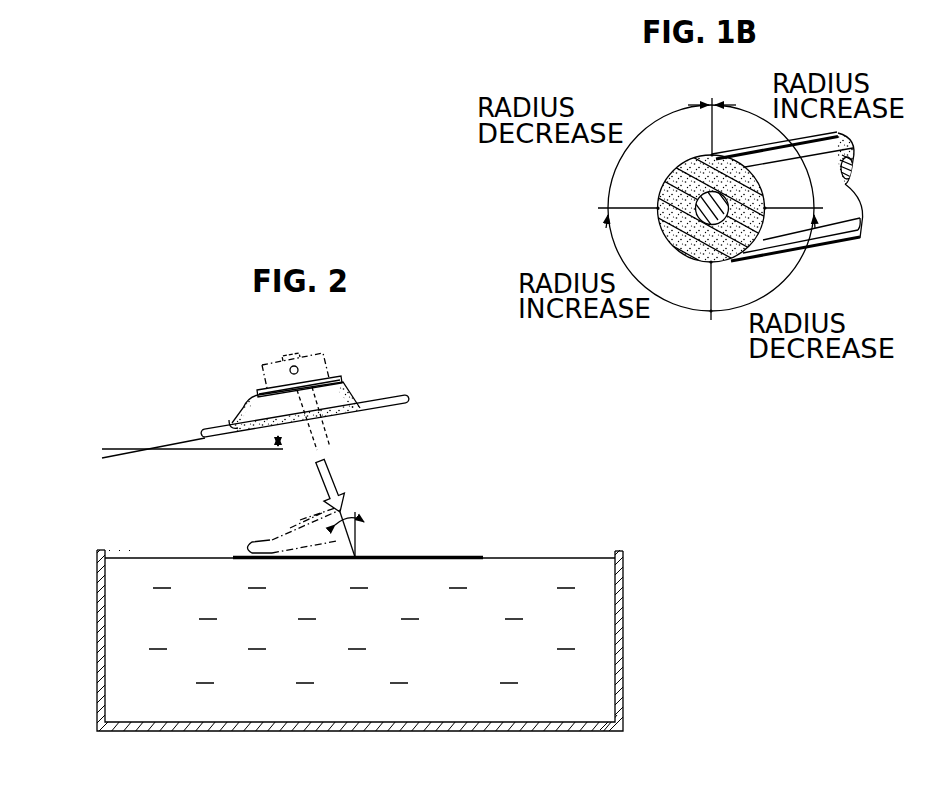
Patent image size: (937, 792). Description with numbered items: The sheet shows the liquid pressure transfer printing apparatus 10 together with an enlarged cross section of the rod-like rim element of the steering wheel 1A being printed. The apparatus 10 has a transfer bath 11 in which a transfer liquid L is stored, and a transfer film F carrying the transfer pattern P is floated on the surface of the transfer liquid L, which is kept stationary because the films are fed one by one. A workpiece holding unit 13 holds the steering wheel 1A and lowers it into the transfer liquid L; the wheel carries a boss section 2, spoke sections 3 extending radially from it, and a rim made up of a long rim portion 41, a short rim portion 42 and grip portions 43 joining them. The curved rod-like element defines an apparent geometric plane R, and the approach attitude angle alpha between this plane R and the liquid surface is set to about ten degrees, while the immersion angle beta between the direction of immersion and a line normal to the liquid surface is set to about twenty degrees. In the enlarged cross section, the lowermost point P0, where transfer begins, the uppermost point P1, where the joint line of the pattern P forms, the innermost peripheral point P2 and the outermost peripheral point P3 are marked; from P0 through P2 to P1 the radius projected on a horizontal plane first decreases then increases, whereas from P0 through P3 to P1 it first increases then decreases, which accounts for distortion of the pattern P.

In FIG. 1B, the steering wheel 1A is at (832, 233).
In FIG. 2, the steering wheel 1A is at (330, 408).
In FIG. 1B, the lowermost point P0 is at (712, 263).
In FIG. 1B, the uppermost point P1 is at (713, 155).
In FIG. 1B, the innermost peripheral point P2 is at (766, 208).
In FIG. 1B, the outermost peripheral point P3 is at (658, 208).
In FIG. 2, the liquid pressure transfer printing apparatus 10 is at (97, 403).
In FIG. 2, the workpiece holding unit 13 is at (311, 366).
In FIG. 2, the boss section 2 is at (334, 381).
In FIG. 2, the spoke section 3 is at (253, 398).
In FIG. 2, the short rim portion 42 is at (221, 428).
In FIG. 2, the grip portion 43 is at (328, 416).
In FIG. 2, the long rim portion 41 is at (376, 407).
In FIG. 2, the transfer bath 11 is at (462, 729).
In FIG. 2, the transfer liquid L is at (469, 664).
In FIG. 2, the transfer pattern P is at (447, 556).
In FIG. 2, the transfer film F is at (472, 557).
In FIG. 2, the apparent geometric plane R is at (192, 452).
In FIG. 2, the approach attitude angle alpha is at (270, 441).
In FIG. 2, the immersion angle beta is at (361, 534).